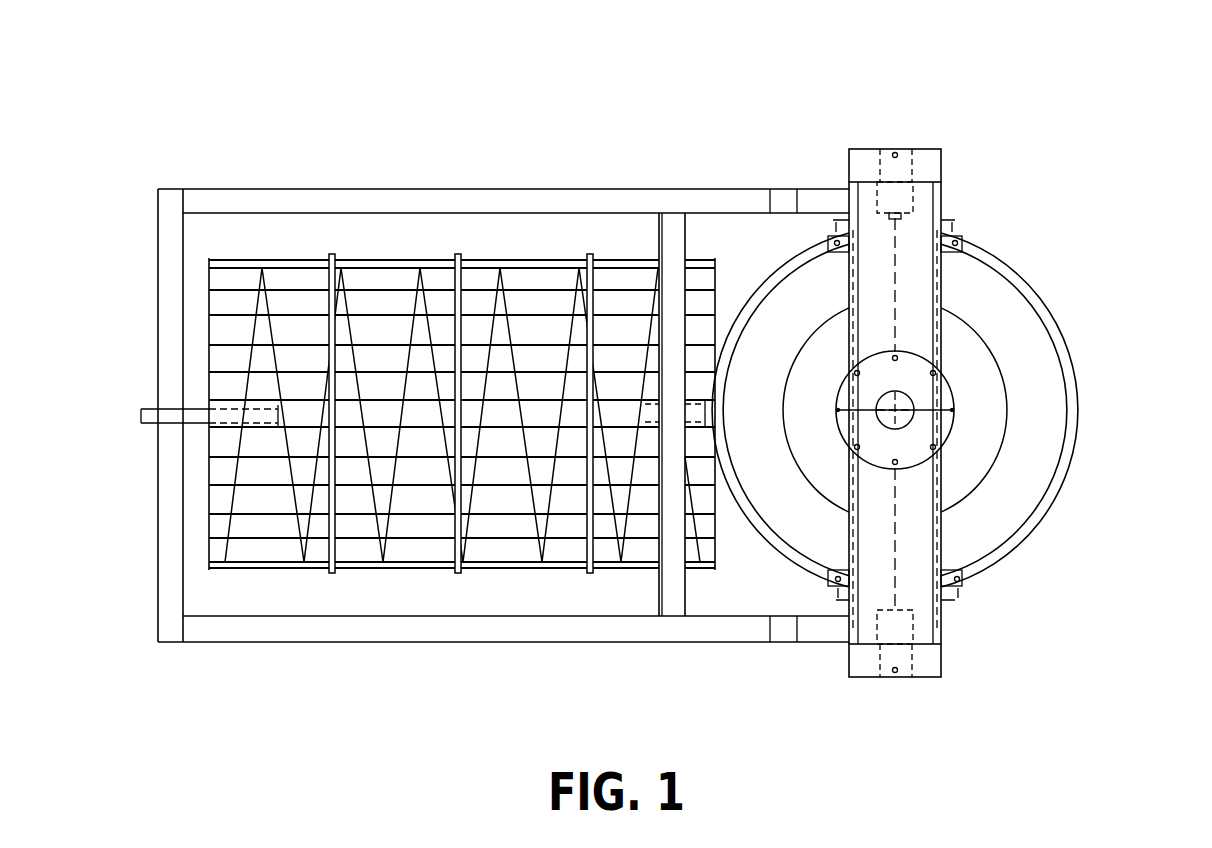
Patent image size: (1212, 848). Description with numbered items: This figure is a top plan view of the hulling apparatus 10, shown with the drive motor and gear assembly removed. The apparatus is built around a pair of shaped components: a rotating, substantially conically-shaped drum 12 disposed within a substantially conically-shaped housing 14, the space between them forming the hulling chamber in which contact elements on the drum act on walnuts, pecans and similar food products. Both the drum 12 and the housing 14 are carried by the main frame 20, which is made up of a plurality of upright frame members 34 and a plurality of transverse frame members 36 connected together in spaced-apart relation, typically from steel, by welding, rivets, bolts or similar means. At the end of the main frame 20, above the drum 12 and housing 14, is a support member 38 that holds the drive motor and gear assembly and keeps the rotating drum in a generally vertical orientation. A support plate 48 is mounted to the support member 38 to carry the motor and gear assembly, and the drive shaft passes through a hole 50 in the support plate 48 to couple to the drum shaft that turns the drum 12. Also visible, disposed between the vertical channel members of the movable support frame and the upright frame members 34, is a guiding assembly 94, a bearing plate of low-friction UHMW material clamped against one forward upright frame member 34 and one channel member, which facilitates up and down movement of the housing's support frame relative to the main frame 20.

The hulling apparatus 10 is at (442, 297).
The drum 12 is at (988, 329).
The housing 14 is at (1092, 369).
The main frame 20 is at (260, 178).
The upright frame members 34 is at (172, 202).
The transverse frame members 36 is at (245, 630).
The support member 38 is at (917, 575).
The support plate 48 is at (937, 437).
The hole 50 is at (905, 398).
The guiding assembly 94 is at (920, 628).